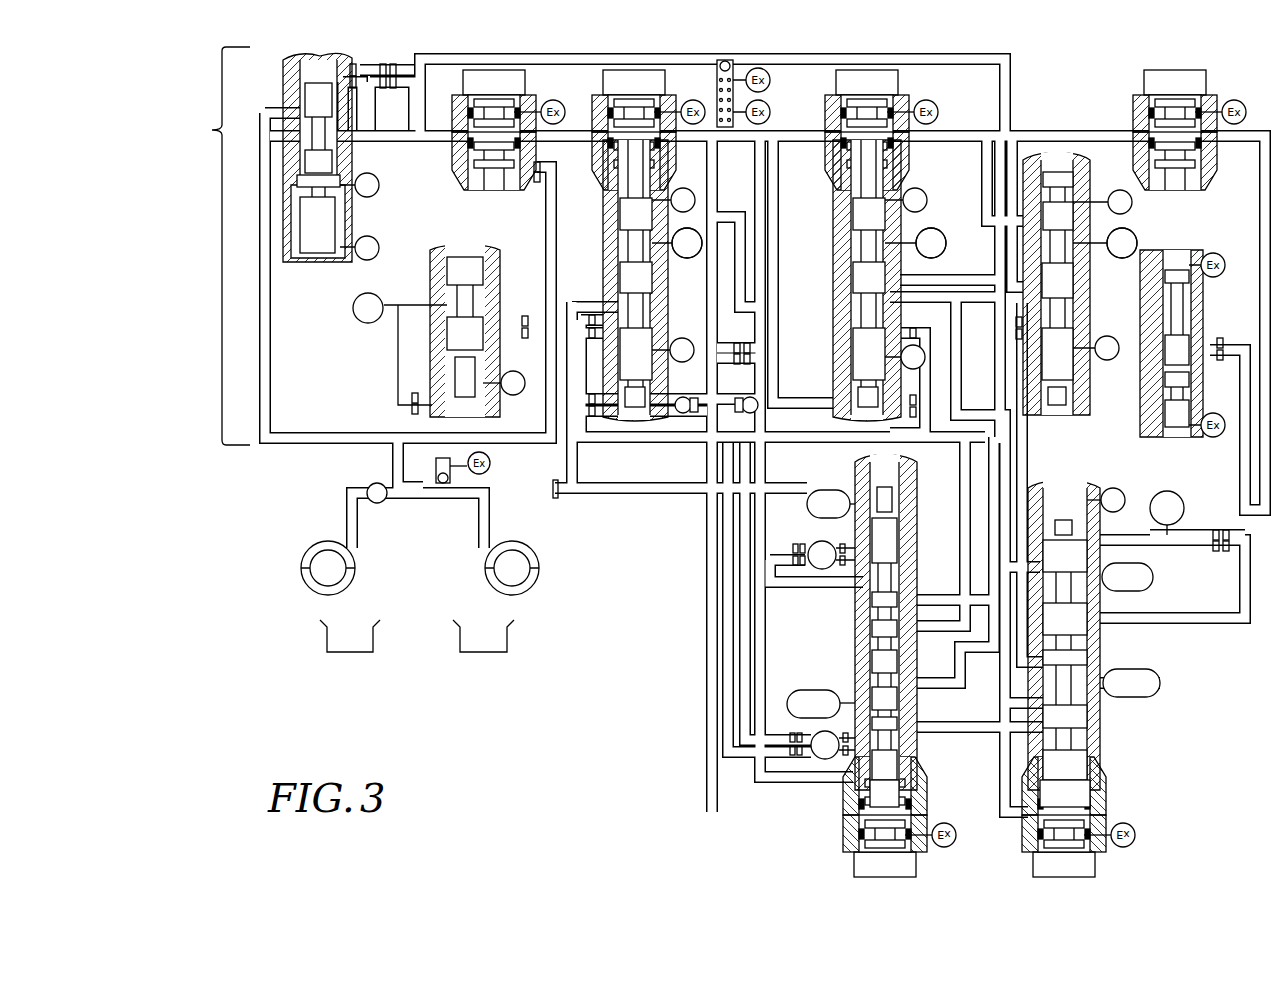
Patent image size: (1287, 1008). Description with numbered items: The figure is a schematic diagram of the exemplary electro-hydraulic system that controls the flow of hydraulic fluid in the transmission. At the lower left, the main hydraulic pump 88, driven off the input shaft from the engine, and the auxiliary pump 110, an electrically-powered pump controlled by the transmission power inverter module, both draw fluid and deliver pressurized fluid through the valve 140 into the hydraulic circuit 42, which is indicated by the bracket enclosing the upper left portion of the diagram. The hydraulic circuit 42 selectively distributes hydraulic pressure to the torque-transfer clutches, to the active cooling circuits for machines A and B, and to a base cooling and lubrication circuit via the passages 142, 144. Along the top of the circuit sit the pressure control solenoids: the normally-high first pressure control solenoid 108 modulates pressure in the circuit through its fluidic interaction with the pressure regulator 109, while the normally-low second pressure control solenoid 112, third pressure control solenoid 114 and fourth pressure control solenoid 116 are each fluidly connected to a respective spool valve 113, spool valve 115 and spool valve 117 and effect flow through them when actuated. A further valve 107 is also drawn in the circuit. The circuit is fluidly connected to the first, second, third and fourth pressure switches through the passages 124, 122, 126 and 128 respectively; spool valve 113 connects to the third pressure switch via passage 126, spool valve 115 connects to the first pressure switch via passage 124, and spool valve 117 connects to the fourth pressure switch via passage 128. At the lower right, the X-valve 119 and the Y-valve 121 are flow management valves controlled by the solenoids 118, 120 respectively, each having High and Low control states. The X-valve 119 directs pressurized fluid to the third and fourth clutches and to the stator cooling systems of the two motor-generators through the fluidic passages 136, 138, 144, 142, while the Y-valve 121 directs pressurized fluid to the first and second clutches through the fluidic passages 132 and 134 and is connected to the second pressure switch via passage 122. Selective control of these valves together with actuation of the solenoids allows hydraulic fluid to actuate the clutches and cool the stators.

The hydraulic circuit 42 is at (212, 118).
The main hydraulic pump 88 is at (520, 590).
The valve 107 is at (318, 265).
The pressure control solenoid PCS1 108 is at (494, 72).
The pressure regulator 109 is at (477, 268).
The auxiliary pump 110 is at (320, 590).
The pressure control solenoid PCS2 112 is at (1165, 72).
The spool valve 113 is at (1062, 278).
The pressure control solenoid PCS3 114 is at (867, 72).
The spool valve 115 is at (853, 183).
The pressure control solenoid PCS4 116 is at (634, 72).
The spool valve 117 is at (633, 216).
The X-valve solenoid 118 is at (868, 870).
The X-valve 119 is at (873, 630).
The Y-valve solenoid 120 is at (1048, 870).
The Y-valve 121 is at (1068, 733).
The passage 122 is at (1172, 492).
The passage 124 is at (940, 232).
The passage 126 is at (1133, 236).
The passage 128 is at (700, 235).
The fluidic passage 132 is at (1160, 683).
The fluidic passage 134 is at (1153, 580).
The fluidic passage 136 is at (810, 690).
The fluidic passage 138 is at (823, 490).
The valve 140 is at (375, 490).
The passage 142 is at (822, 760).
The passage 144 is at (820, 570).